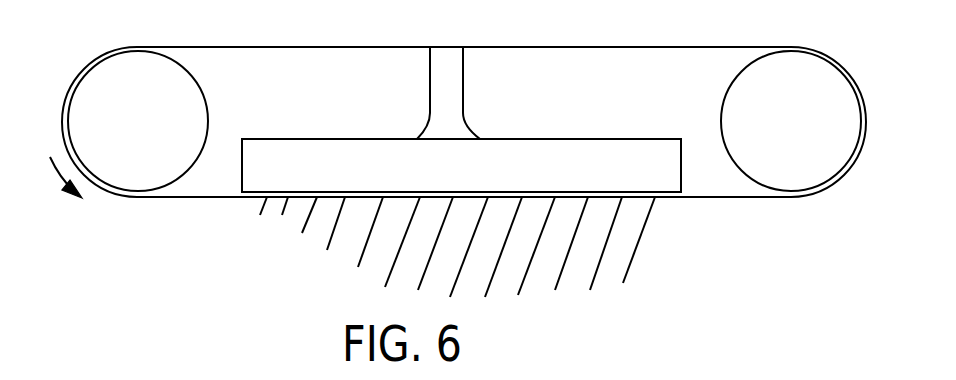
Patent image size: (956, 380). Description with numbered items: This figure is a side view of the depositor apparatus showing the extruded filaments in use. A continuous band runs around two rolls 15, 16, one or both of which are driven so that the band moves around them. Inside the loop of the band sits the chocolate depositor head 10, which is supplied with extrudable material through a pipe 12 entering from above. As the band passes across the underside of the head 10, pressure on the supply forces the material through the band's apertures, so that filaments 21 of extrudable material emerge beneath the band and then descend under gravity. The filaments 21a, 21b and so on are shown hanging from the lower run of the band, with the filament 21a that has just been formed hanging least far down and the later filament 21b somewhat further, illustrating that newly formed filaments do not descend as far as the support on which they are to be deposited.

The chocolate depositor head 10 is at (565, 139).
The pipe 12 is at (463, 96).
The roll 15 is at (162, 72).
The roll 16 is at (832, 83).
The filaments 21 is at (464, 122).
The filament 21a is at (262, 215).
The filament 21b is at (282, 216).